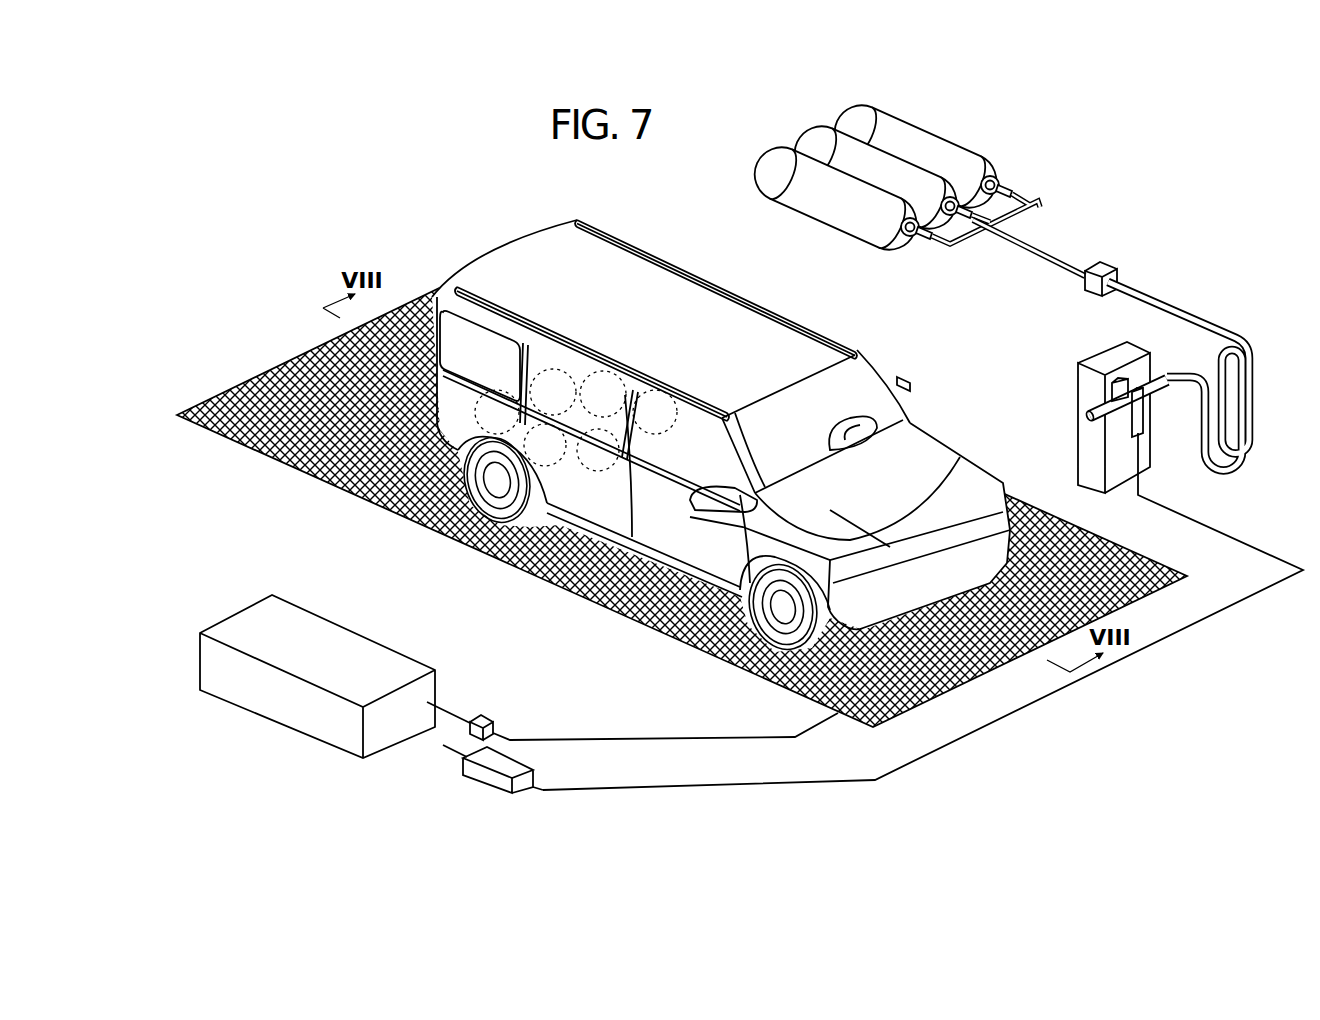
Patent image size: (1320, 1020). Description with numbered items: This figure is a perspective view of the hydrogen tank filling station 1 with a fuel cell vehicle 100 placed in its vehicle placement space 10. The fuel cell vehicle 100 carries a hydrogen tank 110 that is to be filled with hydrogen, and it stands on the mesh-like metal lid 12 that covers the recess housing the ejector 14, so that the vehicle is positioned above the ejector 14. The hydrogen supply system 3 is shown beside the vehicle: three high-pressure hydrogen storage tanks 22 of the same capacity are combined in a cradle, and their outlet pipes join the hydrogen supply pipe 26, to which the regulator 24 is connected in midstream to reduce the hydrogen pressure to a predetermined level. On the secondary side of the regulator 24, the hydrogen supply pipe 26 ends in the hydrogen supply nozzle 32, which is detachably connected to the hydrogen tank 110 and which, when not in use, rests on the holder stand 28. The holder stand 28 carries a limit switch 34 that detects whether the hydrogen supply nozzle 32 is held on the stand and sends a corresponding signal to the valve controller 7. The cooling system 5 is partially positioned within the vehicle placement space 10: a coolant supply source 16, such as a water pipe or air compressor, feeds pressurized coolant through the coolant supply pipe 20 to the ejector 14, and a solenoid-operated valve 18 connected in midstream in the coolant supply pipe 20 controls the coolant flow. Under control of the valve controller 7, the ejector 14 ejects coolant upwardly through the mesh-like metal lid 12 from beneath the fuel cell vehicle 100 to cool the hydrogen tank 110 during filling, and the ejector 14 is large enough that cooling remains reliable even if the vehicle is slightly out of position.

The hydrogen tank filling station 1 is at (321, 244).
The hydrogen supply system 3 is at (1196, 262).
The cooling system 5 is at (372, 782).
The valve controller 7 is at (513, 766).
The vehicle placement space 10 is at (424, 243).
The mesh-like metal lid 12 is at (527, 571).
The ejector 14 is at (638, 624).
The coolant supply source 16 is at (303, 633).
The valve 18 is at (479, 718).
The coolant supply pipe 20 is at (655, 733).
The high-pressure hydrogen storage tank 22 is at (784, 173).
The regulator 24 is at (1104, 266).
The hydrogen supply pipe 26 is at (1223, 333).
The holder stand 28 is at (1107, 357).
The hydrogen supply nozzle 32 is at (1088, 411).
The limit switch 34 is at (1130, 432).
The fuel cell vehicle 100 is at (736, 302).
The hydrogen tank 110 is at (440, 355).